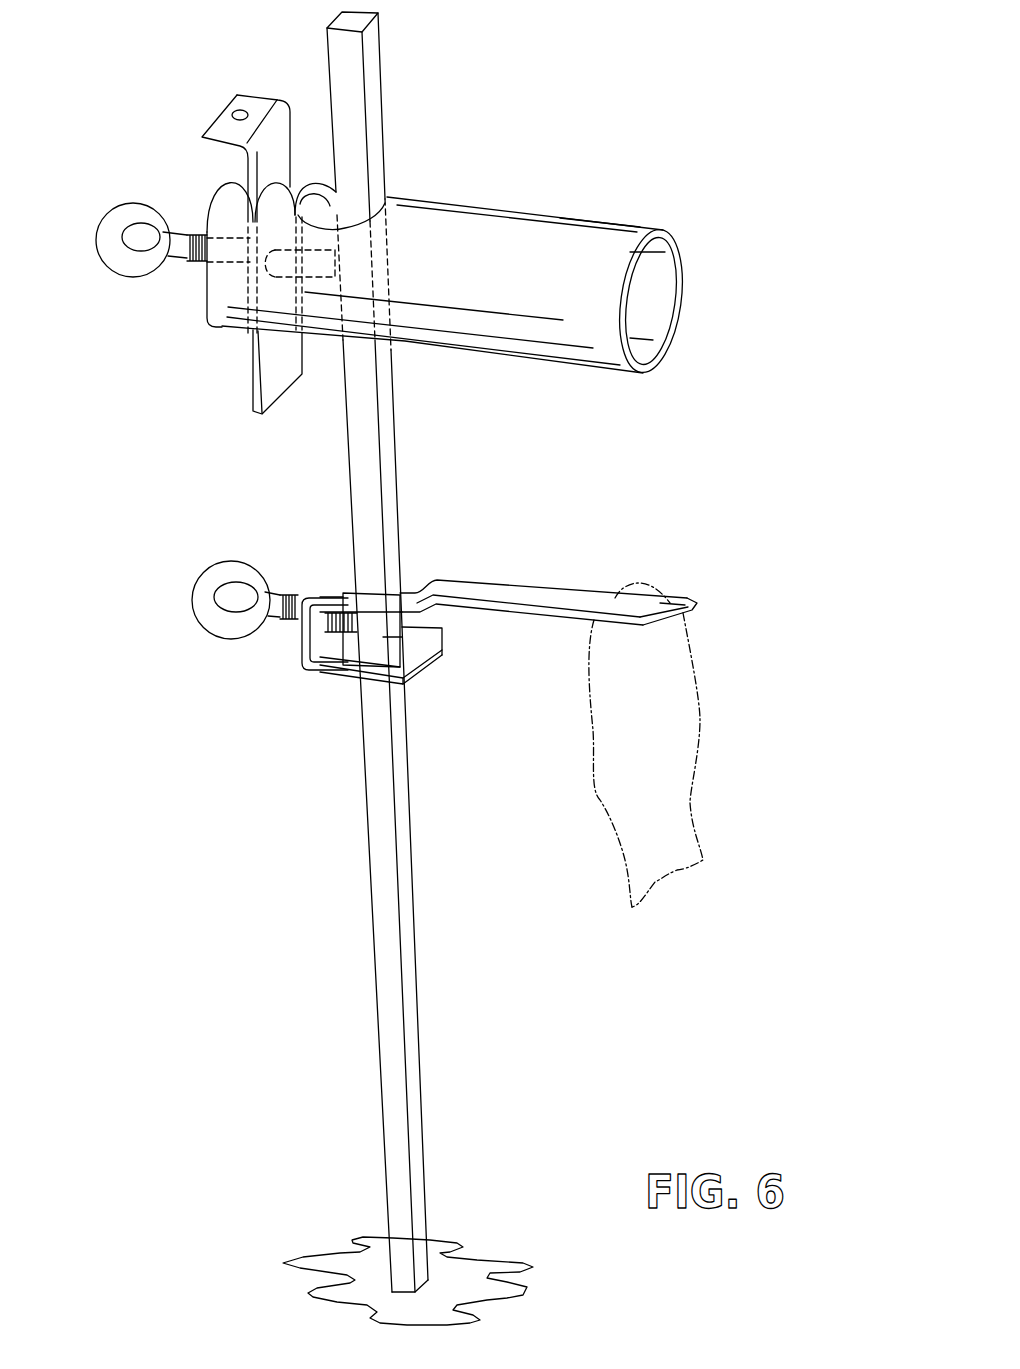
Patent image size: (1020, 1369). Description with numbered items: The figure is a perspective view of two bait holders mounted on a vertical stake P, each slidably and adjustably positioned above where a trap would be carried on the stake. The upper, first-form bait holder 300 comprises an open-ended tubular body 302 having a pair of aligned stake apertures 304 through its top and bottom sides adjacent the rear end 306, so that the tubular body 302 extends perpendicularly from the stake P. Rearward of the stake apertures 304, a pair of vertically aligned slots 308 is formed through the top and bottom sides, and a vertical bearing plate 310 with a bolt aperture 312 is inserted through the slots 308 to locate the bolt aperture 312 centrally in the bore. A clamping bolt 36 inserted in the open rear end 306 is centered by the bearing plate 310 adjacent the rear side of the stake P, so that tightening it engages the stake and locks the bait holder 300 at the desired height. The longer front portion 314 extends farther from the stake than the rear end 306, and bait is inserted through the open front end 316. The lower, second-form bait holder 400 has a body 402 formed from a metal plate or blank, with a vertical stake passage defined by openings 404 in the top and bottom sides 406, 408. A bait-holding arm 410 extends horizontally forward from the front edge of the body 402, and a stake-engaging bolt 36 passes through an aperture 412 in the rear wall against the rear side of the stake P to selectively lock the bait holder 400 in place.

The stake P is at (367, 75).
The clamping bolt 36 is at (120, 222).
The bait holder 300 is at (440, 259).
The tubular body 302 is at (490, 203).
The stake apertures 304 is at (322, 207).
The rear end 306 is at (207, 290).
The slots 308 is at (212, 235).
The bearing plate 310 is at (277, 152).
The bolt aperture 312 is at (272, 282).
The front portion 314 is at (597, 227).
The open front end 316 is at (678, 278).
The bait holder 400 is at (456, 689).
The body 402 is at (418, 558).
The openings 404 is at (343, 640).
The top side 406 is at (430, 570).
The bottom side 408 is at (352, 665).
The bait-holding arm 410 is at (567, 603).
The aperture 412 is at (335, 612).